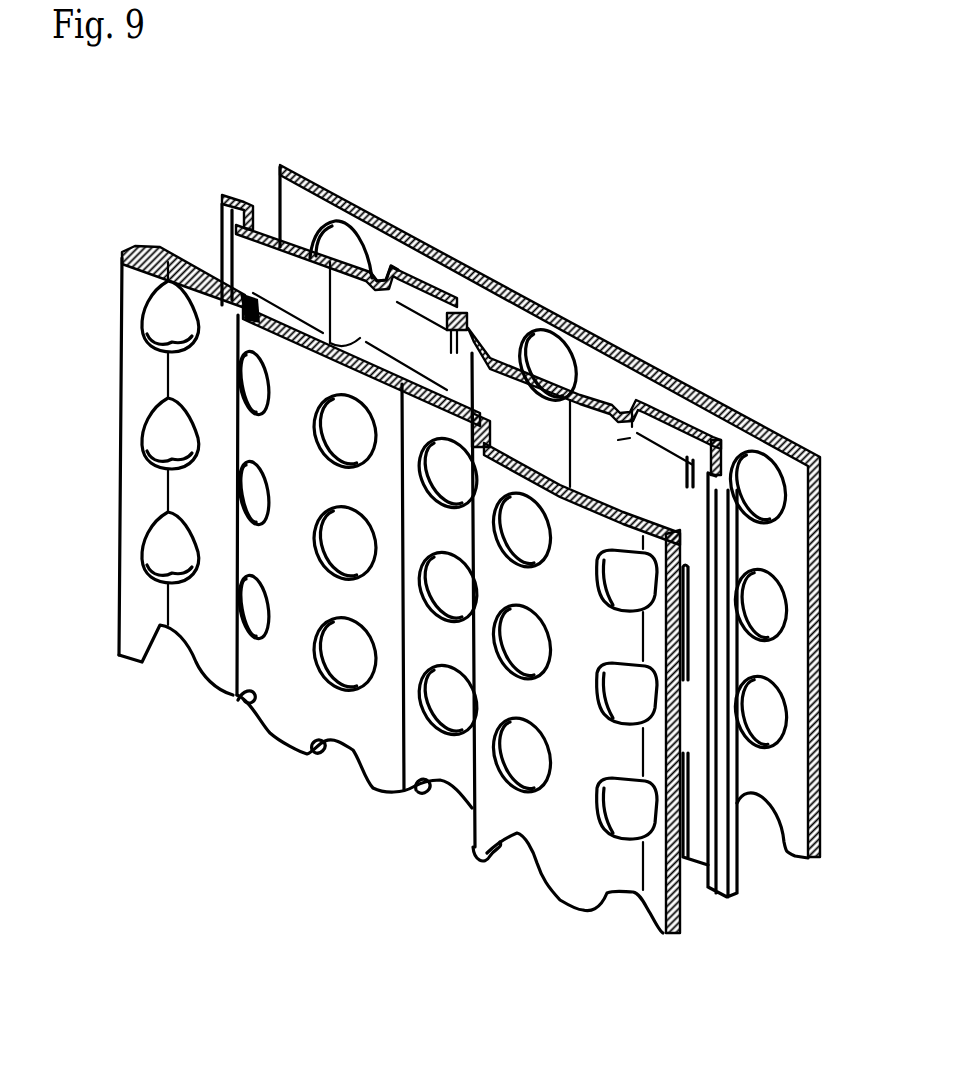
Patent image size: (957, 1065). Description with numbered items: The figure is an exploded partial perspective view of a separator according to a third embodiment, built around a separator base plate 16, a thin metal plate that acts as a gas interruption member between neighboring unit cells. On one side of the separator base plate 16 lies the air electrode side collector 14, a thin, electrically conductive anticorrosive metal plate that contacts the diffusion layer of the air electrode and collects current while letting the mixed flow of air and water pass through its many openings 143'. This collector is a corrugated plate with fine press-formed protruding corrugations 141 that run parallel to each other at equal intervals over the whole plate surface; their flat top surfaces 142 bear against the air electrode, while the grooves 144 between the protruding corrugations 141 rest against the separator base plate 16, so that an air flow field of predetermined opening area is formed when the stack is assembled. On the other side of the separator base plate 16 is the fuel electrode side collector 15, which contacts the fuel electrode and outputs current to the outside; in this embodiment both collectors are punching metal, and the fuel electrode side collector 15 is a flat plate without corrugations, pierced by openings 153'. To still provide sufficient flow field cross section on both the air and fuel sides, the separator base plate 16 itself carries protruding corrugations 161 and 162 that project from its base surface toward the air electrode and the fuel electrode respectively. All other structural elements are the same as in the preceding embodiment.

The air electrode side collector 14 is at (382, 589).
The protruding corrugations 141 is at (240, 698).
The flat top surfaces 142 is at (333, 738).
The openings 143' is at (570, 662).
The grooves 144 is at (394, 280).
The fuel electrode side collector 15 is at (582, 511).
The openings 153' is at (803, 597).
The separator base plate 16 is at (456, 311).
The protruding corrugation 161 is at (262, 262).
The protruding corrugation 162 is at (433, 280).